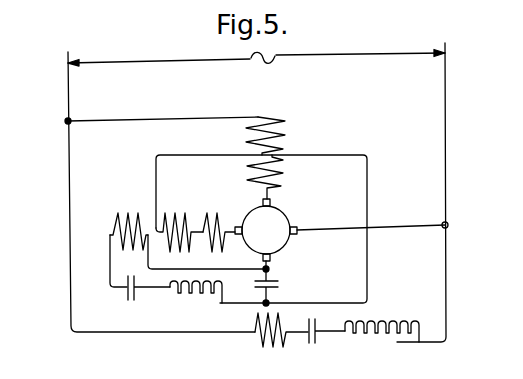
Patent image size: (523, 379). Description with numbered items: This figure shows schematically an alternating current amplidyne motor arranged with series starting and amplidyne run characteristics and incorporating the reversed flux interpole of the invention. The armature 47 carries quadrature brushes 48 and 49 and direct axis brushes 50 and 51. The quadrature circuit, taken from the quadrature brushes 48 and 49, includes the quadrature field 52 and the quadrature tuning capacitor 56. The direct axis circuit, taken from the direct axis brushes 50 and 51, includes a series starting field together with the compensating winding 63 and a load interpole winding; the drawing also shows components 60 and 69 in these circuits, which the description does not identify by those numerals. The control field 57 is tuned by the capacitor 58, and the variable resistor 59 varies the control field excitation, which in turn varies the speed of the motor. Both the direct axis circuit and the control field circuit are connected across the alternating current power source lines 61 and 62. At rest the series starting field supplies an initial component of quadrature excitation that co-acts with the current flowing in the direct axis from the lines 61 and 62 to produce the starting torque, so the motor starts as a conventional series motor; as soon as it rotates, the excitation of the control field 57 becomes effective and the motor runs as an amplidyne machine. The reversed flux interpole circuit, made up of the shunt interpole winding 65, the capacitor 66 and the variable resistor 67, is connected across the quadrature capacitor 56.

The armature 47 is at (266, 230).
The quadrature brush 48 is at (272, 203).
The quadrature brush 49 is at (272, 258).
The direct axis brush 50 is at (238, 236).
The direct axis brush 51 is at (293, 225).
The quadrature field 52 is at (277, 172).
The quadrature tuning capacitor 56 is at (279, 286).
The control field 57 is at (281, 340).
The capacitor 58 is at (321, 341).
The variable resistor 59 is at (397, 342).
The resistor 60 is at (277, 128).
The alternating current power source line 61 is at (65, 121).
The alternating current power source line 62 is at (386, 226).
The compensating winding 63 is at (172, 217).
The shunt interpole winding 65 is at (129, 250).
The capacitor 66 is at (144, 299).
The variable resistor 67 is at (200, 298).
The resistor 69 is at (212, 217).